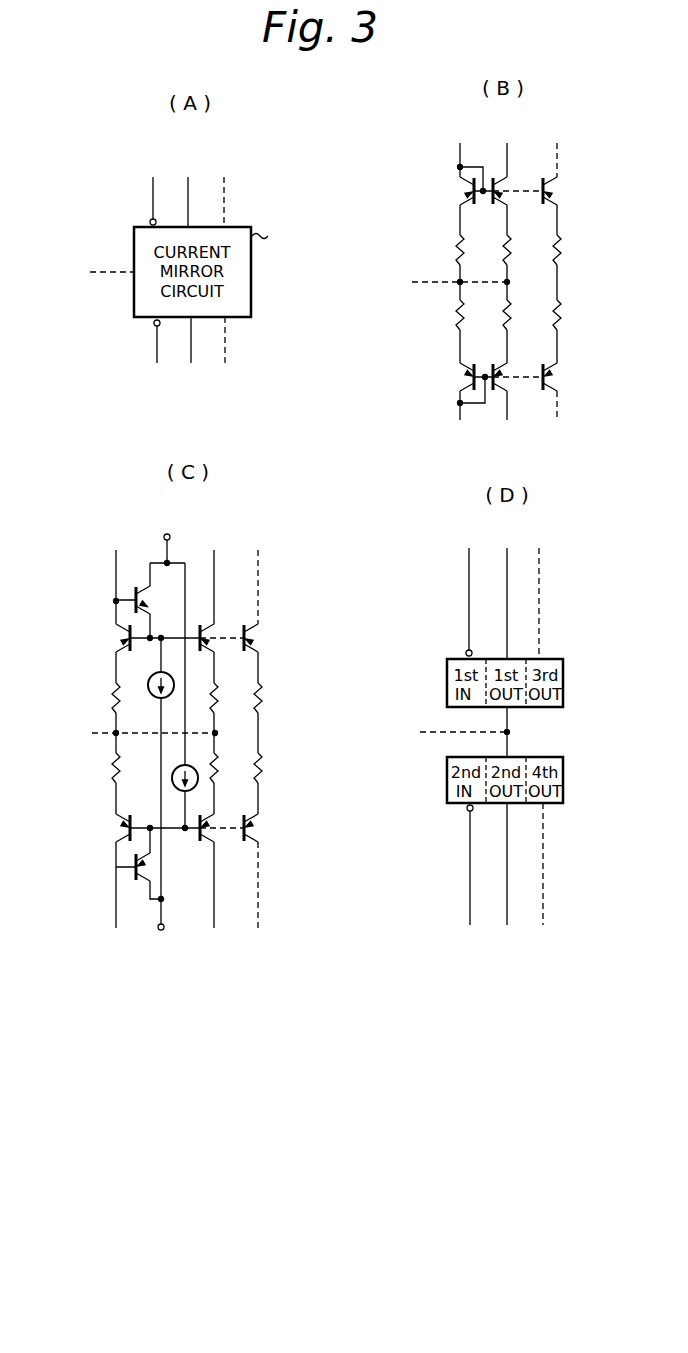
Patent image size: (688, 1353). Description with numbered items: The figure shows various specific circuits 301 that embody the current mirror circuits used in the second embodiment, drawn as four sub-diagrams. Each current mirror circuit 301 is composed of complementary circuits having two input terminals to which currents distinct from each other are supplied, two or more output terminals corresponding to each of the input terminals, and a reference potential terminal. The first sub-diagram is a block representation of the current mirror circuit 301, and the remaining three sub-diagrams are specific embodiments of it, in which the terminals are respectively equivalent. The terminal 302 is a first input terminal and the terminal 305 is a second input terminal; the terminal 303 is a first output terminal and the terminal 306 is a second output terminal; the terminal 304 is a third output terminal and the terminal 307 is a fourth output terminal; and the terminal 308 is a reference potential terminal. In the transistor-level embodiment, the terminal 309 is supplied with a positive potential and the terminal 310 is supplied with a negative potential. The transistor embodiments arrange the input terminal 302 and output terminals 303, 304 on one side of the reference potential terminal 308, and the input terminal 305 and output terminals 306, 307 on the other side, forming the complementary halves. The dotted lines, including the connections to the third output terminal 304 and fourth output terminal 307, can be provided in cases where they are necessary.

The current mirror circuit 301 is at (284, 232).
The first input terminal 302 is at (287, 388).
The first output terminal 303 is at (350, 389).
The third output terminal 304 is at (399, 389).
The second input terminal 305 is at (284, 637).
The second output terminal 306 is at (351, 636).
The fourth output terminal 307 is at (401, 636).
The reference potential terminal 308 is at (274, 504).
The positive potential terminal 309 is at (163, 534).
The negative potential terminal 310 is at (157, 931).